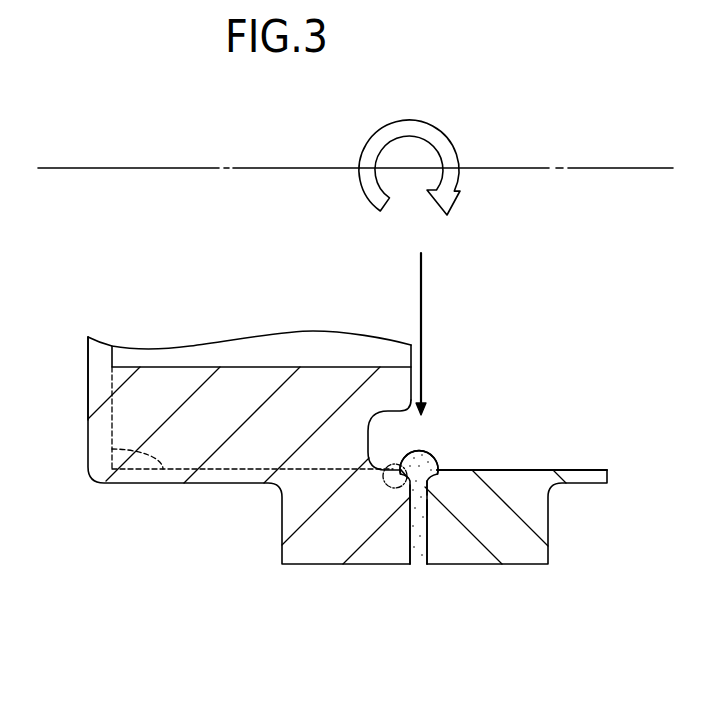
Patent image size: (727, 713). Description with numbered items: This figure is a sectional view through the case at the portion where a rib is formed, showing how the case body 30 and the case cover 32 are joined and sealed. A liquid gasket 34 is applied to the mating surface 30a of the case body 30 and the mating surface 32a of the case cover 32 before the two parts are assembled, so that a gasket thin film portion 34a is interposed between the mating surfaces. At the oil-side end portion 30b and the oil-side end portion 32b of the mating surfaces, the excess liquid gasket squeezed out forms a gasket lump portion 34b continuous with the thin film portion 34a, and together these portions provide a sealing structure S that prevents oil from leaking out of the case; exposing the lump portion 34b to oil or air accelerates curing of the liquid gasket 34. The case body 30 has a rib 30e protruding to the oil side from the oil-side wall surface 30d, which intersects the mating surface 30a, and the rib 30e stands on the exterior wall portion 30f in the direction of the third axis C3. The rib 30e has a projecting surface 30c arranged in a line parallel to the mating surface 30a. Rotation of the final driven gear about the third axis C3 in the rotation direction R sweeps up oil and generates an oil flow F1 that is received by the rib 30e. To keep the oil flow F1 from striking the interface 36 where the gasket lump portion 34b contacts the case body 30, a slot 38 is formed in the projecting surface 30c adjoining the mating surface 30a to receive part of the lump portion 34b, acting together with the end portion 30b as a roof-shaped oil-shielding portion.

The case body 30 is at (256, 590).
The mating surface 30a is at (408, 487).
The oil-side end portion 30b is at (407, 479).
The projecting surface 30c is at (411, 344).
The oil-side wall surface 30d is at (112, 449).
The rib 30e is at (262, 313).
The exterior wall portion 30f is at (95, 403).
The case cover 32 is at (497, 641).
The mating surface 32a is at (426, 482).
The oil-side end portion 32b is at (428, 507).
The liquid gasket 34 is at (464, 431).
The gasket thin film portion 34a is at (418, 564).
The gasket lump portion 34b is at (429, 460).
The interface 36 is at (374, 489).
The slot 38 is at (368, 437).
The sealing structure S is at (492, 463).
The oil flow F1 is at (423, 303).
The rotation direction R is at (418, 128).
The third axis C3 is at (550, 167).